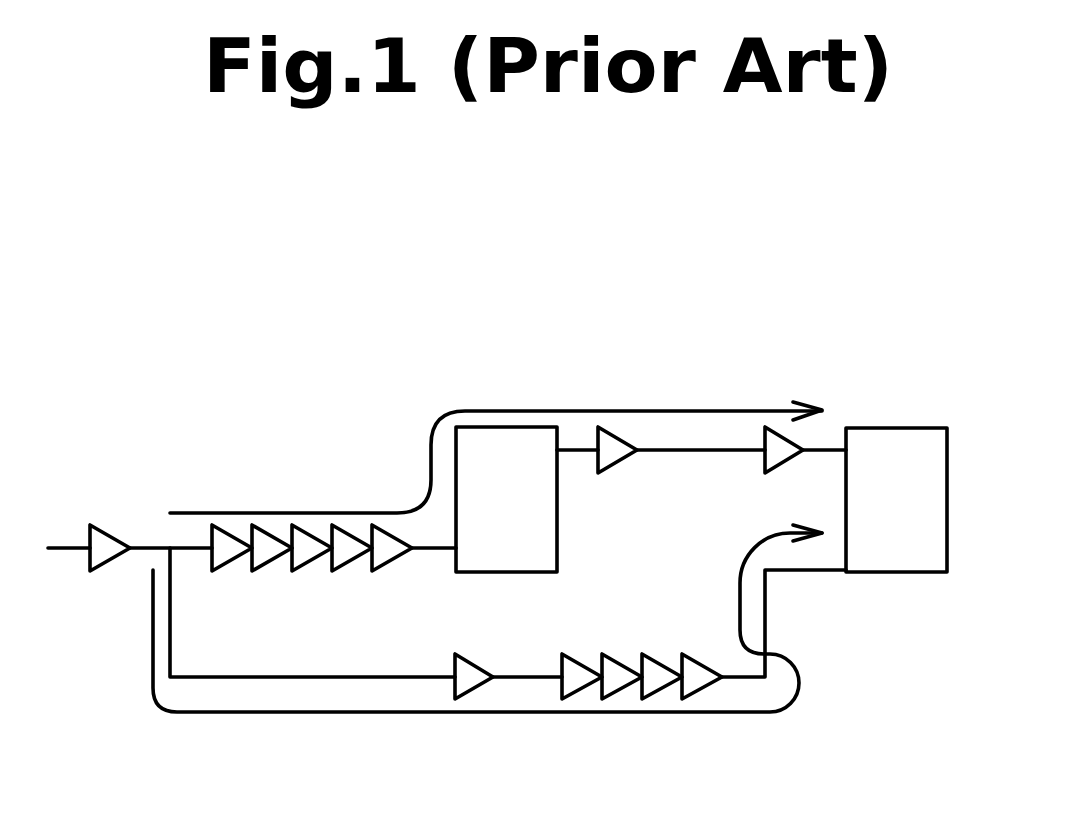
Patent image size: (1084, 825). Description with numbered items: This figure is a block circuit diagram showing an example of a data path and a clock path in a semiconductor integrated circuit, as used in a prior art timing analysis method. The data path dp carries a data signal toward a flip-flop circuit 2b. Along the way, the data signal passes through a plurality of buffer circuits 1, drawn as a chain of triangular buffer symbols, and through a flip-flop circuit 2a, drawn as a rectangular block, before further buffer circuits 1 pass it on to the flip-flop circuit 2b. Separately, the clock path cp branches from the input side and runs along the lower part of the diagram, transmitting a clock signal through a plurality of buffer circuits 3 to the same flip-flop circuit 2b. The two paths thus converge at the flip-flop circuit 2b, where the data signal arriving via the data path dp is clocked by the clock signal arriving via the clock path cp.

The buffer circuits 1 is at (412, 583).
The flip-flop circuit 2a is at (557, 537).
The flip-flop circuit 2b is at (893, 428).
The buffer circuits 3 is at (725, 640).
The data path dp is at (664, 410).
The clock path cp is at (418, 712).